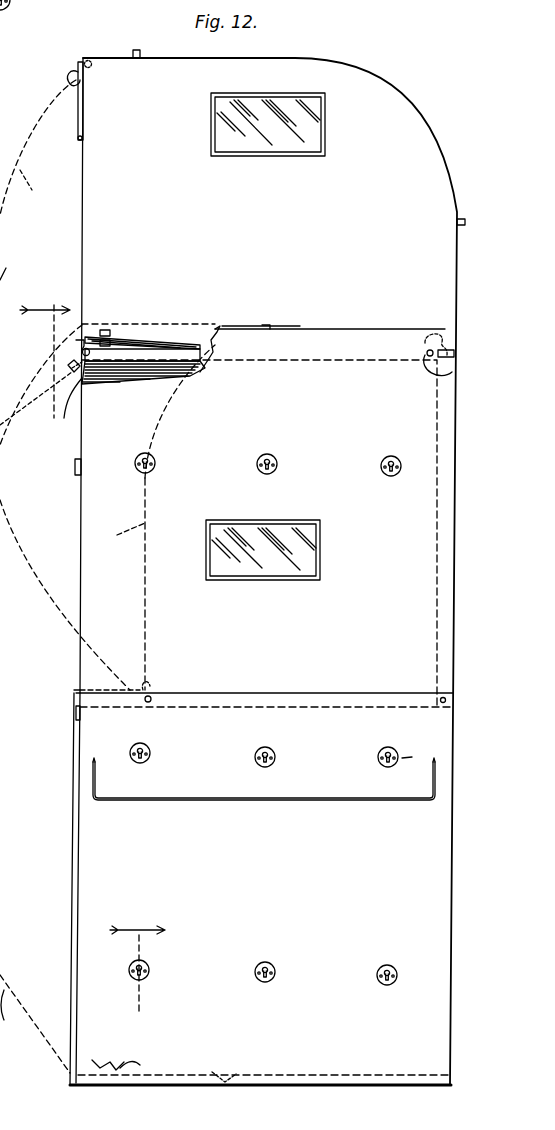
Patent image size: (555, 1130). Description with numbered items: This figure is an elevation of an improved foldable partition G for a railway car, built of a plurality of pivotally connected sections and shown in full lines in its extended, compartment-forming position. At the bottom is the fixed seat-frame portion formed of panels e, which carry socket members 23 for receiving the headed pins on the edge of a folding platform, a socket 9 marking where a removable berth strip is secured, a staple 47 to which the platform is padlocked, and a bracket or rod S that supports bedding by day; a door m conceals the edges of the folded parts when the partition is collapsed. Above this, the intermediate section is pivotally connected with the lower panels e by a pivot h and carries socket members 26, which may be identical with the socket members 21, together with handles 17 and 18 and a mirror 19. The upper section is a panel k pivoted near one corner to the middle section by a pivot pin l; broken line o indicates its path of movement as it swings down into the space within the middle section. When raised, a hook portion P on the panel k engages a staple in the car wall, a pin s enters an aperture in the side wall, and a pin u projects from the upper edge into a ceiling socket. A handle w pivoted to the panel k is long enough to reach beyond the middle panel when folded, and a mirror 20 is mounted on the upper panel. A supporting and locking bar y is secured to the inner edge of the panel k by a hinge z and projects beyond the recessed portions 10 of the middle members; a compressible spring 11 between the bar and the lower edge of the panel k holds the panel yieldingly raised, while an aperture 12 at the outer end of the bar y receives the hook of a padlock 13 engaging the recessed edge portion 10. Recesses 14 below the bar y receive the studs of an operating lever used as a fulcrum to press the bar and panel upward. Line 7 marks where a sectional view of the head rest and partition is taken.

The partition G is at (263, 571).
The socket 9 is at (415, 570).
The lower fixed seat-frame panel e is at (97, 880).
The mirror 20 is at (305, 140).
The mirror 19 is at (288, 530).
The socket member 26 is at (141, 453).
The socket member 23 is at (151, 753).
The socket member 21 is at (150, 966).
The bracket or rod S is at (345, 806).
The staple 47 is at (416, 757).
The pivot h is at (447, 698).
The door m is at (72, 760).
The pin u is at (141, 50).
The pin s is at (466, 221).
The upper foldable panel k is at (432, 196).
The handle w is at (78, 120).
The line of movement of upper panel o is at (32, 190).
The hook portion P is at (5, 281).
The recess 14 is at (92, 676).
The supporting and locking bar y is at (155, 355).
The hinge z is at (220, 326).
The compressible spring 11 is at (104, 335).
The recessed portion 10 is at (82, 350).
The aperture 12 is at (84, 354).
The padlock 13 is at (72, 372).
The handle 17 is at (272, 325).
The pivot pin l is at (452, 372).
The handle 18 is at (76, 470).
The section line 7 is at (137, 958).